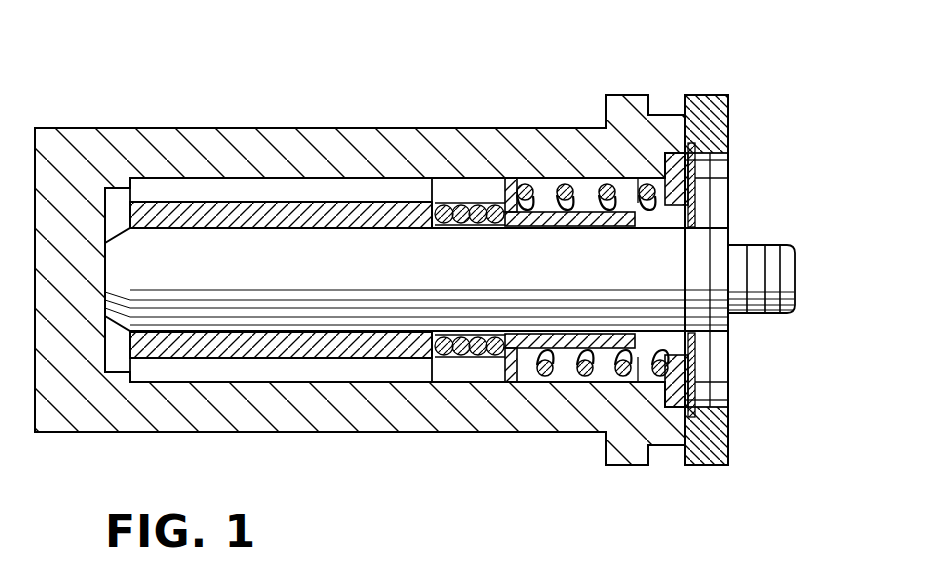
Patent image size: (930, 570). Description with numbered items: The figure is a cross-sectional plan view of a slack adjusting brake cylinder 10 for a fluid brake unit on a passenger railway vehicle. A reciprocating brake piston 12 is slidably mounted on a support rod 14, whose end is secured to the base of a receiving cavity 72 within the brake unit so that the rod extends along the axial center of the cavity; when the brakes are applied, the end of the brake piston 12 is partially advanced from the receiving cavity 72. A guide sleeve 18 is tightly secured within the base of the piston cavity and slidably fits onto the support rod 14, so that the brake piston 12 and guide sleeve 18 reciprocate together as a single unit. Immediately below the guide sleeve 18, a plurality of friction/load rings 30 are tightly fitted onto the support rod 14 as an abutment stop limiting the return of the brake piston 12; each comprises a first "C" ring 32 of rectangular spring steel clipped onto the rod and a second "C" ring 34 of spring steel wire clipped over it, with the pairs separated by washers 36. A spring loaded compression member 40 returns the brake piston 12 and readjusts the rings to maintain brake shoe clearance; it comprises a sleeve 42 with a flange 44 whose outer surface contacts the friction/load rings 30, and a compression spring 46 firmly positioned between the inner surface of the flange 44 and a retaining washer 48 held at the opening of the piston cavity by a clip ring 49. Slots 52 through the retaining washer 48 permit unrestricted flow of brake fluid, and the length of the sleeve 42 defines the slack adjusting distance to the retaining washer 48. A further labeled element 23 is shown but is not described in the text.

The slack adjusting brake cylinder 10 is at (81, 116).
The brake piston 12 is at (122, 145).
The support rod 14 is at (287, 245).
The guide sleeve 18 is at (207, 200).
The end cap 23 is at (730, 130).
The friction/load rings 30 is at (488, 197).
The first "C" ring 32 is at (440, 332).
The second "C" ring 34 is at (472, 332).
The washers 36 is at (425, 205).
The spring loaded compression member 40 is at (616, 229).
The sleeve 42 is at (563, 345).
The flange 44 is at (507, 365).
The compression spring 46 is at (597, 182).
The retaining washer 48 is at (680, 180).
The clip ring 49 is at (700, 158).
The slots 52 is at (680, 342).
The receiving cavity 72 is at (458, 183).